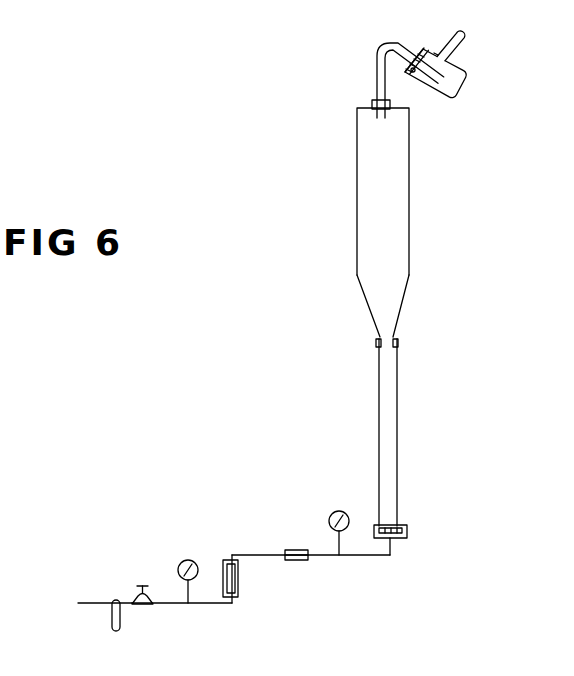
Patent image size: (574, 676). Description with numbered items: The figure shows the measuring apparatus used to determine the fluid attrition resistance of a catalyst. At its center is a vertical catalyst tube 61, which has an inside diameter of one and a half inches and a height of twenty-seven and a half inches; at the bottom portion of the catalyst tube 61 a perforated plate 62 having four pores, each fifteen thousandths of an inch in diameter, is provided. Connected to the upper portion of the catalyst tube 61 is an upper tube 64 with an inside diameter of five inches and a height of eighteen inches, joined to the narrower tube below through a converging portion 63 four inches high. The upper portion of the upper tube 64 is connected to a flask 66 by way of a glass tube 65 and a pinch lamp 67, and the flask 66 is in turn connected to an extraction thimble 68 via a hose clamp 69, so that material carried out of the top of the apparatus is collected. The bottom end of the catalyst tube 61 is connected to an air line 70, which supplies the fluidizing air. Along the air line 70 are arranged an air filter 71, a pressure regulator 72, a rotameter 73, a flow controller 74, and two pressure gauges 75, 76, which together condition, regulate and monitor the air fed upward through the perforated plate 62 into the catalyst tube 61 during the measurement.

The catalyst tube 61 is at (361, 437).
The perforated plate 62 is at (398, 538).
The converging portion 63 is at (408, 317).
The upper tube 64 is at (415, 243).
The glass tube 65 is at (374, 55).
The flask 66 is at (474, 80).
The pinch lamp 67 is at (415, 83).
The extraction thimble 68 is at (467, 41).
The hose clamp 69 is at (437, 50).
The air line 70 is at (94, 612).
The air filter 71 is at (116, 634).
The pressure regulator 72 is at (143, 614).
The rotameter 73 is at (241, 584).
The flow controller 74 is at (293, 547).
The pressure gauge 75 is at (338, 508).
The pressure gauge 76 is at (188, 557).